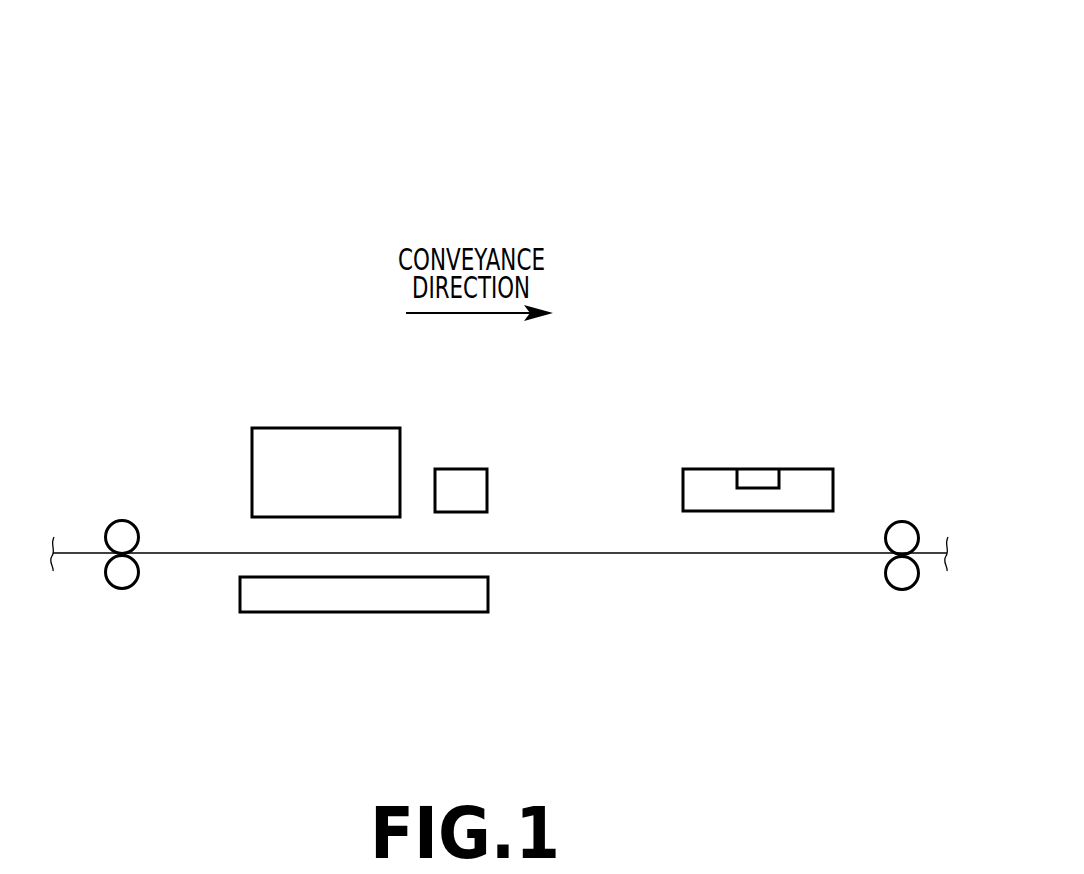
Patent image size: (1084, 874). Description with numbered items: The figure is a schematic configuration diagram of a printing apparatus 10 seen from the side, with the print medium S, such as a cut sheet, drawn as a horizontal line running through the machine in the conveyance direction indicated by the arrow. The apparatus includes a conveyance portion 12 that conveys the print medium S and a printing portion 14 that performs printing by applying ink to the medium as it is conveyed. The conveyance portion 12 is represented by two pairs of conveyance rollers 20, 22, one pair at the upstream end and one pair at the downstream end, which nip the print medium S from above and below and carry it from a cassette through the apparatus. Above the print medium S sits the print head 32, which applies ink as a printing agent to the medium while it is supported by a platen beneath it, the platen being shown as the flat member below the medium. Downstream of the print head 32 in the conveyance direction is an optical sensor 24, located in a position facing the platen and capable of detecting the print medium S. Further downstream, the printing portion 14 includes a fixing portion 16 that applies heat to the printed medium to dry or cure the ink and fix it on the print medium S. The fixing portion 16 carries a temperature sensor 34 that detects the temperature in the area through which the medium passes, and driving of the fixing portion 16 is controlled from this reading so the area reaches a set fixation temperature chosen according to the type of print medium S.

The printing apparatus 10 is at (843, 99).
The conveyance portion 12 is at (124, 640).
The printing portion 14 is at (311, 664).
The fixing portion 16 is at (710, 482).
The conveyance roller 20 is at (122, 520).
The conveyance roller 22 is at (902, 521).
The optical sensor 24 is at (462, 469).
The print head 32 is at (328, 428).
The temperature sensor 34 is at (762, 480).
The print medium S is at (657, 554).